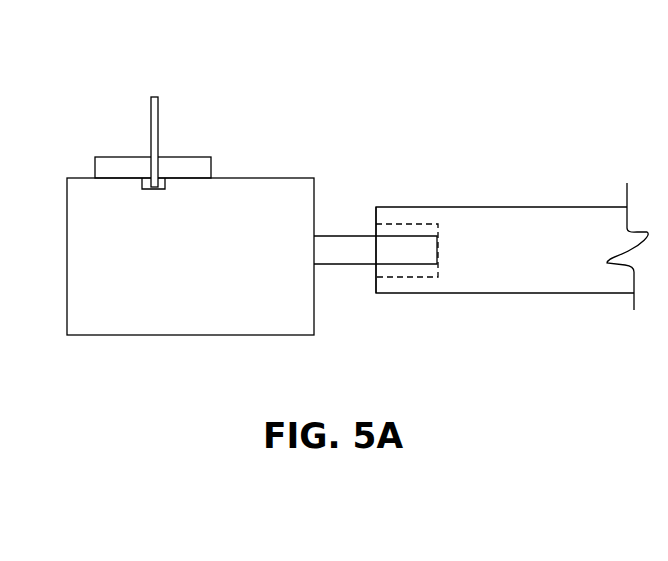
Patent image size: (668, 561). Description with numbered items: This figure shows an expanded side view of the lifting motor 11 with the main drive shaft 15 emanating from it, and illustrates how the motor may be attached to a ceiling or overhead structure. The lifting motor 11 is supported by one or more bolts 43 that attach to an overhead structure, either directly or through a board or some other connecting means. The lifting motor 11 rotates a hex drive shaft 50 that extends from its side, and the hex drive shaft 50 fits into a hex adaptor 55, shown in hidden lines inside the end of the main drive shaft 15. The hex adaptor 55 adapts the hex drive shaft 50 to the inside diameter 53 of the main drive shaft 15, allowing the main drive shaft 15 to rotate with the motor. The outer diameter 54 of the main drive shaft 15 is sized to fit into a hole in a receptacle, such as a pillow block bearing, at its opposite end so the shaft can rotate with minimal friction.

The lifting motor 11 is at (181, 300).
The bolt 43 is at (159, 109).
The hex drive shaft 50 is at (358, 257).
The inside diameter 53 is at (473, 222).
The outer diameter 54 is at (424, 207).
The hex adaptor 55 is at (410, 270).
The main drive shaft 15 is at (522, 217).